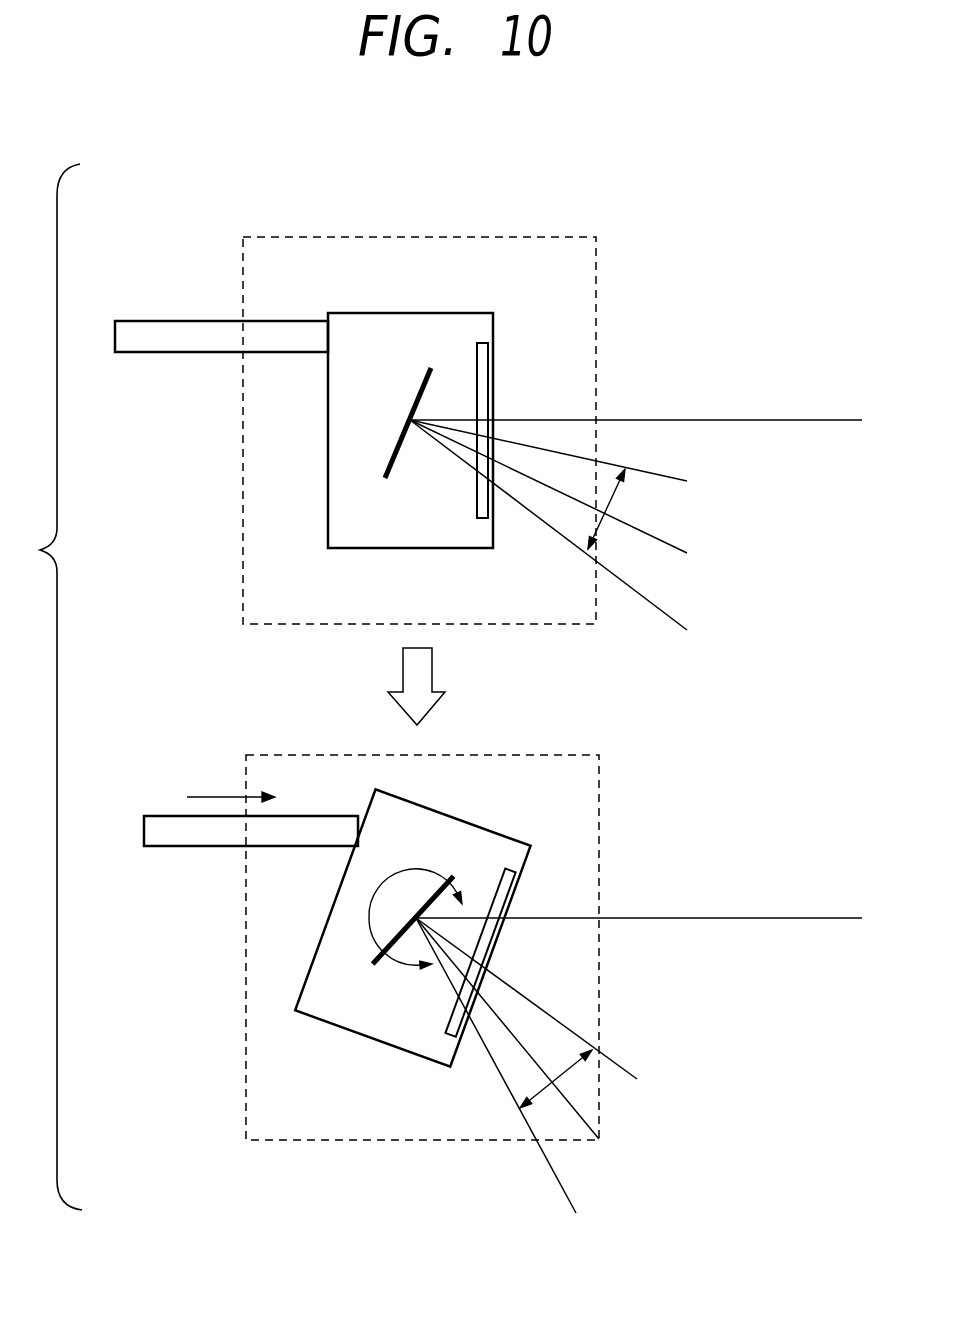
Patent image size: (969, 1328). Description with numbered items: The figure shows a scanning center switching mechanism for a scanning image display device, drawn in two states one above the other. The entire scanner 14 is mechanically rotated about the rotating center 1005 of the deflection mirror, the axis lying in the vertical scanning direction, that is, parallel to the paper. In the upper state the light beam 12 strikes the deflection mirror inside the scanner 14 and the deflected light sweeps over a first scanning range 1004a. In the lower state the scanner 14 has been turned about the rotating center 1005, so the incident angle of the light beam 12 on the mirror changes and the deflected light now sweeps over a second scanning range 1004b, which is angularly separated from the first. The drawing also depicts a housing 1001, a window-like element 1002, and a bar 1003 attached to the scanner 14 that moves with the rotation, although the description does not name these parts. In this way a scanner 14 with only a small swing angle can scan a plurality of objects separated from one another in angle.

The light beam 12 is at (782, 420).
The scanner 14 is at (528, 237).
The housing 1001 is at (328, 522).
The window / transparent plate 1002 is at (493, 363).
The drive arm 1003 is at (140, 352).
The scanning range 1004a is at (615, 500).
The scanning range 1004b is at (565, 1077).
The rotating center 1005 is at (405, 417).